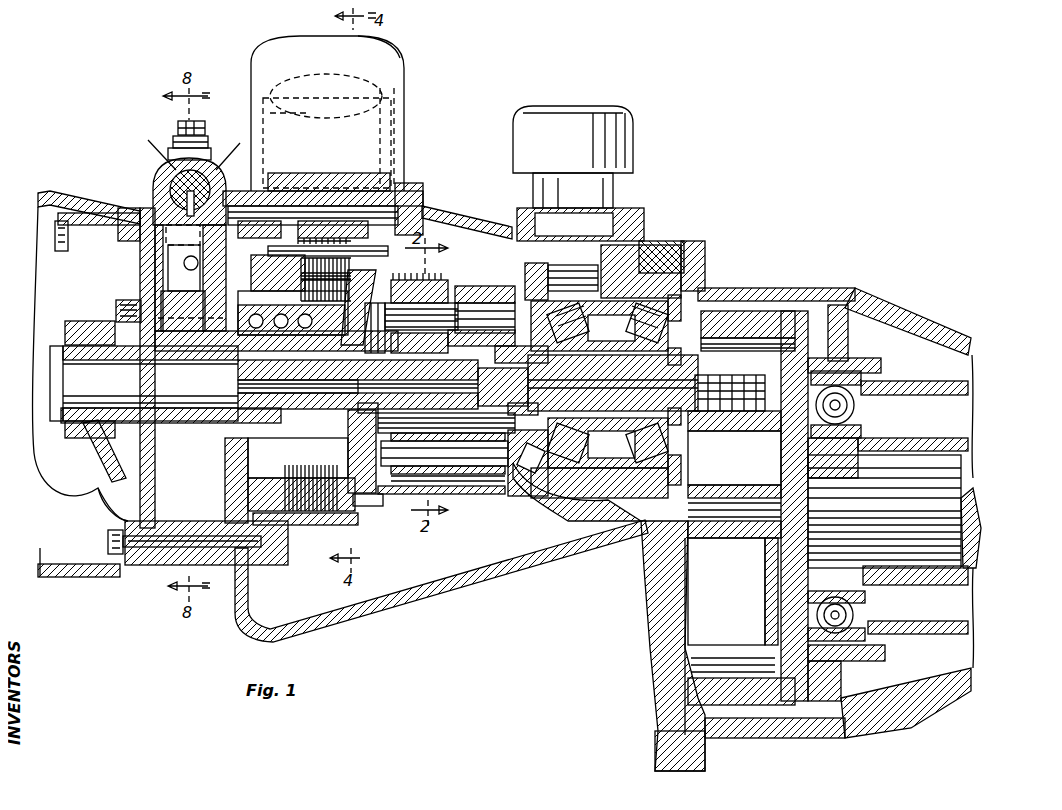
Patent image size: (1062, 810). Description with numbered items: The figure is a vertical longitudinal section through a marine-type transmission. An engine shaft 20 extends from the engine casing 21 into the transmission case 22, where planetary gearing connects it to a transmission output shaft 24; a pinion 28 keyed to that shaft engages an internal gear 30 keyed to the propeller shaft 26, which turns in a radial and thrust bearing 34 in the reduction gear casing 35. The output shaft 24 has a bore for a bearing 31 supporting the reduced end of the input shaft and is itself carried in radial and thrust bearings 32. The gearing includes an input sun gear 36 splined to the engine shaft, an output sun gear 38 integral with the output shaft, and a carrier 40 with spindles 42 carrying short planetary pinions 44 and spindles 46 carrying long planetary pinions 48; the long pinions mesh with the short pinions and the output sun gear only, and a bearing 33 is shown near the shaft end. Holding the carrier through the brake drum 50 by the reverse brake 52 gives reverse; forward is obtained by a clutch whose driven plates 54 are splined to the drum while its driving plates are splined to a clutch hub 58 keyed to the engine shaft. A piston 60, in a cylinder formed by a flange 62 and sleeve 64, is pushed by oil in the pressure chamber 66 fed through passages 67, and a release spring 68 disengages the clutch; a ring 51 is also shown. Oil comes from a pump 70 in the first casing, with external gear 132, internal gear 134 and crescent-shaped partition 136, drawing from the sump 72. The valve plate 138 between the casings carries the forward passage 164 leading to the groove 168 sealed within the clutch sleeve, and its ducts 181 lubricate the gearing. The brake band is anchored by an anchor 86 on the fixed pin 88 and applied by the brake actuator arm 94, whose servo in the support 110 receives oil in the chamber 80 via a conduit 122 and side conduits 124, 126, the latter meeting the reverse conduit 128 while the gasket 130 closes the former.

The engine shaft 20 is at (46, 346).
The engine casing 21 is at (54, 185).
The transmission case 22 is at (473, 213).
The transmission output shaft 24 is at (748, 331).
The propeller shaft 26 is at (958, 462).
The pinion 28 is at (740, 428).
The internal gear 30 is at (781, 301).
The bearing 31 is at (503, 387).
The radial and thrust bearings 32 is at (600, 305).
The spacer 33 is at (531, 404).
The radial and thrust bearing 34 is at (848, 397).
The reduction gear casing 35 is at (935, 324).
The input sun gear 36 is at (446, 453).
The output sun gear 38 is at (536, 444).
The carrier 40 is at (485, 282).
The spindles 42 is at (440, 285).
The short planetary pinions 44 is at (386, 285).
The spindles 46 is at (462, 478).
The long planetary pinions 48 is at (502, 432).
The brake drum 50 is at (345, 268).
The retaining ring 51 is at (383, 495).
The reverse brake 52 is at (335, 517).
The driven plates 54 is at (298, 240).
The clutch hub 58 is at (360, 490).
The piston 60 is at (330, 512).
The flange 62 is at (240, 490).
The sleeve 64 is at (222, 432).
The pressure chamber 66 is at (243, 262).
The passages 67 is at (232, 296).
The release spring 68 is at (240, 458).
The pump 70 is at (105, 290).
The sump 72 is at (240, 622).
The chamber 80 is at (398, 68).
The anchor 86 is at (352, 185).
The fixed pin 88 is at (395, 180).
The brake actuator arm 94 is at (316, 185).
The support 110 is at (380, 42).
The conduit 122 is at (326, 94).
The conduit 124 is at (388, 112).
The conduit 126 is at (264, 108).
The reverse conduit 128 is at (147, 190).
The gasket 130 is at (416, 190).
The external gear 132 is at (92, 445).
The internal gear 134 is at (97, 482).
The crescent-shaped partition 136 is at (108, 303).
The valve plate 138 is at (160, 560).
The forward passage 164 is at (130, 232).
The groove 168 is at (298, 378).
The ducts 181 is at (225, 386).